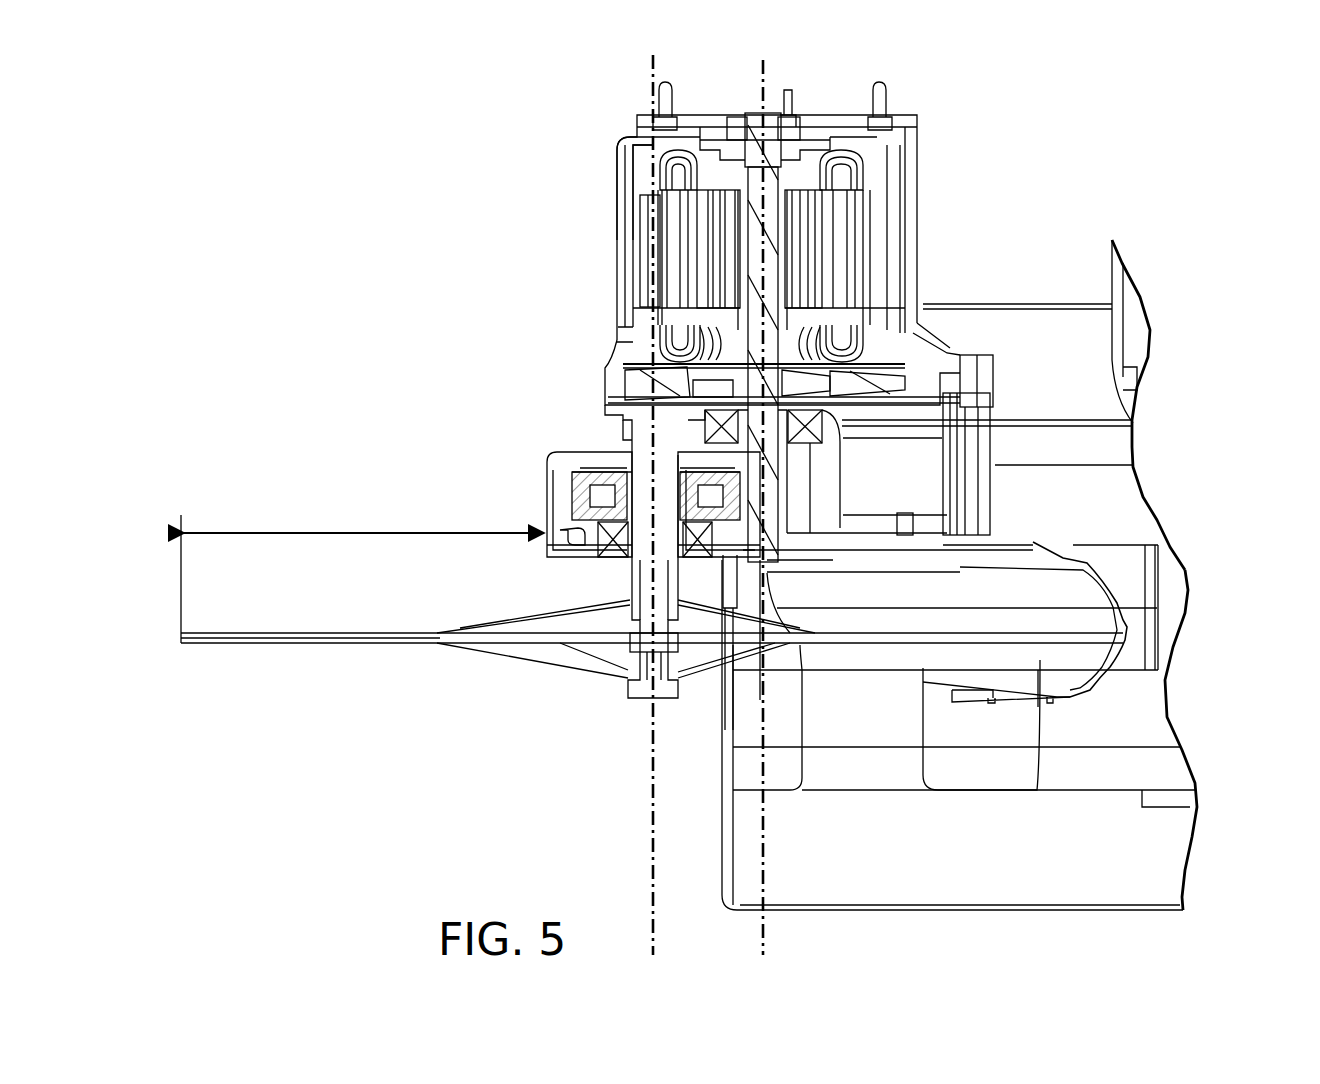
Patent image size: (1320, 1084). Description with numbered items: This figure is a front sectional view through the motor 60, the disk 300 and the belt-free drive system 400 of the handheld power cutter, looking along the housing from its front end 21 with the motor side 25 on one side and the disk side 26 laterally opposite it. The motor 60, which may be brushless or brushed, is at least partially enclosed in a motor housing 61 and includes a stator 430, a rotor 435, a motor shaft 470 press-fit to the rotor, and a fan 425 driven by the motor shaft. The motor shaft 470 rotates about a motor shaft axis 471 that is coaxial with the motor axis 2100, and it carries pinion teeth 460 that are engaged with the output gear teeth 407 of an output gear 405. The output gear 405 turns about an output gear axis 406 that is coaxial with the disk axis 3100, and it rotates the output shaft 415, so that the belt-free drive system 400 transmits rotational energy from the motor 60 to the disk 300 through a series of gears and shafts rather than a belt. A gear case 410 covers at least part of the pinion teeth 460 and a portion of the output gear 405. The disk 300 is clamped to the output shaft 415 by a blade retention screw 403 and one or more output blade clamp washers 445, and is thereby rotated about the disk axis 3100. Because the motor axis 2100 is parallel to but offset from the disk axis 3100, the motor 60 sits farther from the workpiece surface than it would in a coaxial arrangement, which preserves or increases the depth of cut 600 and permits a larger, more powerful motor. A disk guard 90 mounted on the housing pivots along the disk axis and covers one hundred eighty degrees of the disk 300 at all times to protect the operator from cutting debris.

The front end 21 is at (177, 656).
The motor side 25 is at (1052, 295).
The disk side 26 is at (1152, 918).
The motor 60 is at (600, 262).
The motor housing 61 is at (625, 183).
The disk guard 90 is at (1055, 693).
The disk 300 is at (418, 652).
The belt-free drive system 400 is at (548, 568).
The blade retention screw 403 is at (640, 700).
The output gear 405 is at (573, 493).
The output gear axis 406 is at (655, 442).
The output gear teeth 407 is at (788, 510).
The gear case 410 is at (550, 513).
The output shaft 415 is at (633, 463).
The fan 425 is at (640, 385).
The stator 430 is at (640, 215).
The rotor 435 is at (813, 252).
The output blade clamp washer 445 is at (547, 617).
The pinion teeth 460 is at (740, 480).
The motor shaft 470 is at (750, 235).
The motor shaft axis 471 is at (775, 197).
The depth of cut 600 is at (283, 530).
The motor axis 2100 is at (766, 64).
The disk axis 3100 is at (652, 62).